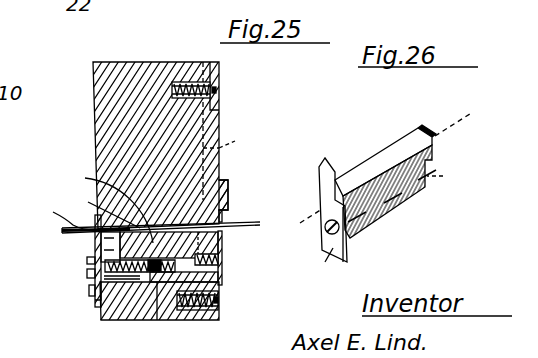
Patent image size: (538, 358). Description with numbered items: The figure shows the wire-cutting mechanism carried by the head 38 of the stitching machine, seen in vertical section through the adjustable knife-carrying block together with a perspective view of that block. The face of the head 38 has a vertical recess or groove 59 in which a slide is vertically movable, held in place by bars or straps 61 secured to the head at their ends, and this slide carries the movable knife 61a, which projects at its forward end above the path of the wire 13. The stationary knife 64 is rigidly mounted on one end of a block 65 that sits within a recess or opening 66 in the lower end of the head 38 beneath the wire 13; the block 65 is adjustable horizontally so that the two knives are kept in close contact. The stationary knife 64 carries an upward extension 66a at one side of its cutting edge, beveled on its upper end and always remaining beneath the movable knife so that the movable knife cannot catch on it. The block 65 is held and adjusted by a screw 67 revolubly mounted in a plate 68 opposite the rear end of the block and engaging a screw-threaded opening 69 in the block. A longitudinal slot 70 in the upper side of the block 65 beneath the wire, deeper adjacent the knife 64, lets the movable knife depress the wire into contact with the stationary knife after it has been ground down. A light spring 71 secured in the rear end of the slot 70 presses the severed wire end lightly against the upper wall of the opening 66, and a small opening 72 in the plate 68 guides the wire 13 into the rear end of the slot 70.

In FIG. 25, the wire 13 is at (62, 231).
In FIG. 26, the wire 13 is at (462, 116).
In FIG. 25, the head 38 is at (106, 127).
In FIG. 25, the vertical recess or groove 59 is at (241, 135).
In FIG. 25, the bars or straps 61 is at (222, 104).
In FIG. 25, the knife 61a is at (226, 184).
In FIG. 25, the stationary knife 64 is at (222, 248).
In FIG. 26, the stationary knife 64 is at (320, 263).
In FIG. 25, the block 65 is at (103, 204).
In FIG. 26, the block 65 is at (449, 175).
In FIG. 25, the recess or opening 66 is at (95, 246).
In FIG. 26, the upward extension 66a is at (333, 158).
In FIG. 25, the screw 67 is at (97, 298).
In FIG. 25, the plate 68 is at (95, 289).
In FIG. 25, the screw-threaded opening 69 is at (153, 319).
In FIG. 25, the longitudinal slot 70 is at (228, 223).
In FIG. 26, the longitudinal slot 70 is at (402, 152).
In FIG. 25, the light spring 71 is at (100, 211).
In FIG. 26, the light spring 71 is at (366, 178).
In FIG. 25, the small opening 72 is at (60, 209).